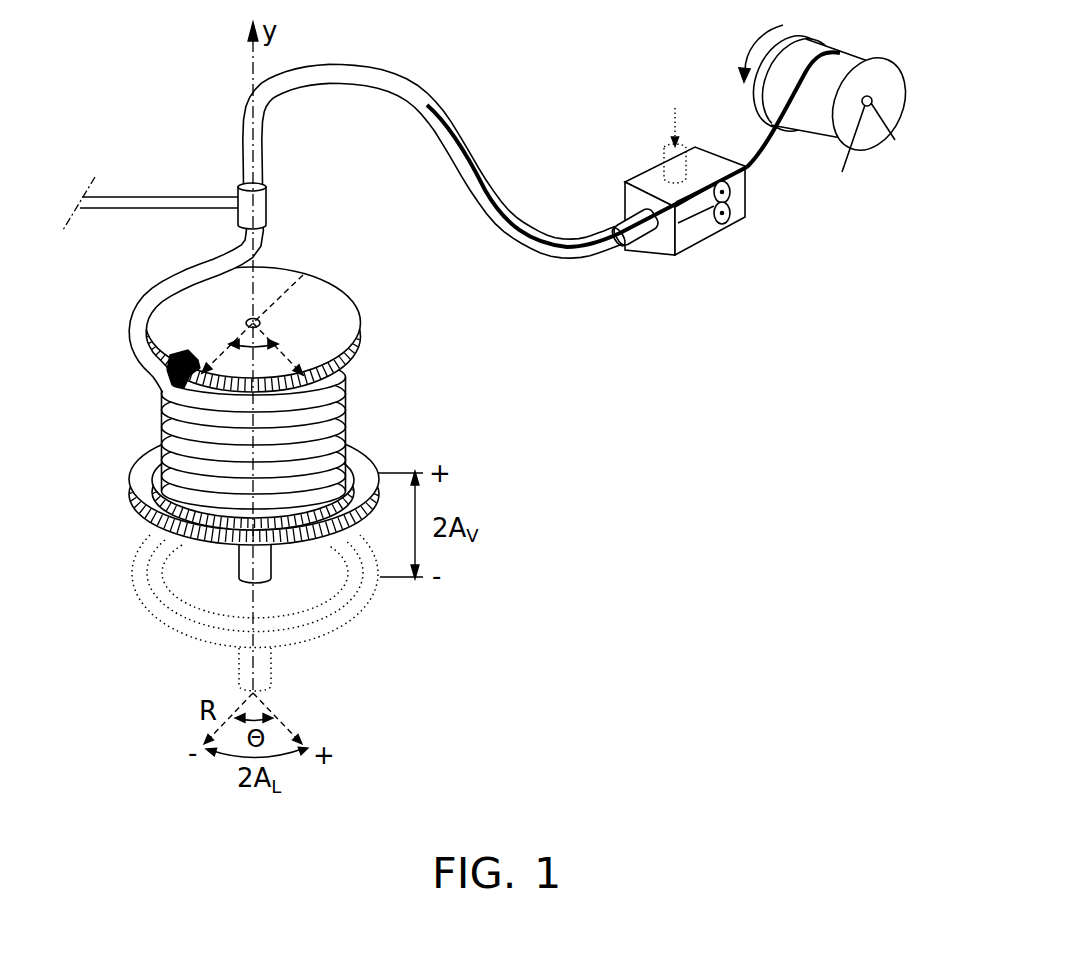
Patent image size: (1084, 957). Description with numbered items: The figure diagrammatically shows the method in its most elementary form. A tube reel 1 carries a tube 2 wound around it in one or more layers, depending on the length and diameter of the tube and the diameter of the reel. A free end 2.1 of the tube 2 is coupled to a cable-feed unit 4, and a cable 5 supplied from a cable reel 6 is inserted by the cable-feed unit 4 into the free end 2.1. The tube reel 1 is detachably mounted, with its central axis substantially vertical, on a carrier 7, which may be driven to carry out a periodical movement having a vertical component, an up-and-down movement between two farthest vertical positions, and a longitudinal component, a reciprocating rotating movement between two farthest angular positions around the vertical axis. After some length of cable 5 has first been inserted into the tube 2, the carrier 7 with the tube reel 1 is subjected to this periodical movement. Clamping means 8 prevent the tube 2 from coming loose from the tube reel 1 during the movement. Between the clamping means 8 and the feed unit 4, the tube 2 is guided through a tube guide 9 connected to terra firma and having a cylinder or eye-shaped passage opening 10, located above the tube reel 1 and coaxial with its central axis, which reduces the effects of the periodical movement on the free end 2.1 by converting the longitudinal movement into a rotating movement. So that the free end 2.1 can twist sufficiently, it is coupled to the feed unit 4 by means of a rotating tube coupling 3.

The tube reel 1 is at (340, 305).
The tube 2 is at (343, 402).
The free end of the tube 2.1 is at (390, 70).
The rotating tube coupling 3 is at (621, 242).
The cable-feed unit 4 is at (695, 243).
The cable 5 is at (748, 163).
The cable reel 6 is at (883, 72).
The carrier 7 is at (140, 480).
The clamping means 8 is at (166, 368).
The tube guide 9 is at (266, 206).
The passage opening 10 is at (270, 178).